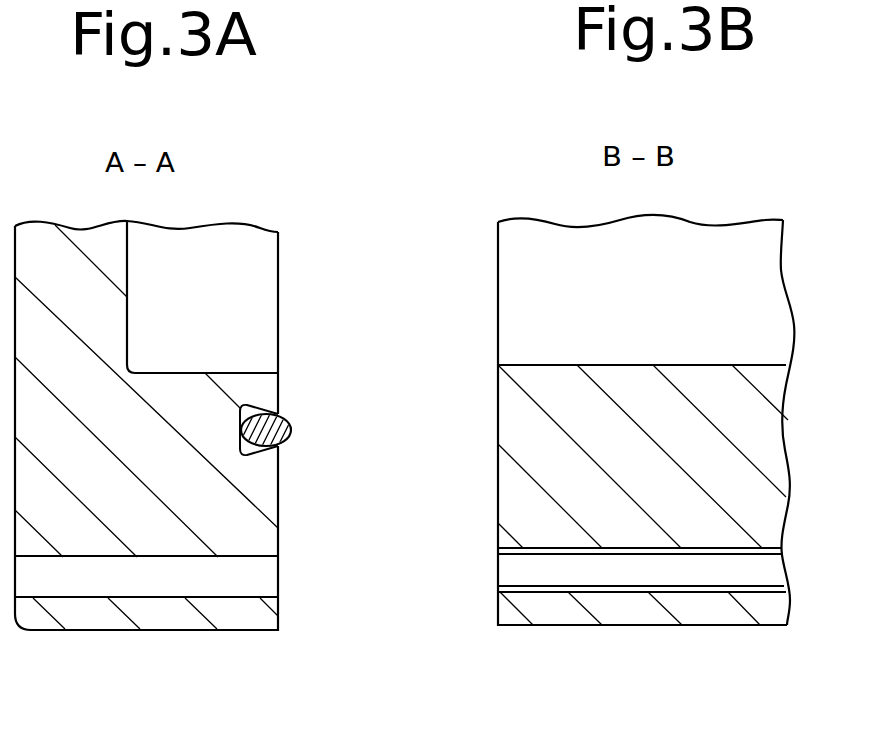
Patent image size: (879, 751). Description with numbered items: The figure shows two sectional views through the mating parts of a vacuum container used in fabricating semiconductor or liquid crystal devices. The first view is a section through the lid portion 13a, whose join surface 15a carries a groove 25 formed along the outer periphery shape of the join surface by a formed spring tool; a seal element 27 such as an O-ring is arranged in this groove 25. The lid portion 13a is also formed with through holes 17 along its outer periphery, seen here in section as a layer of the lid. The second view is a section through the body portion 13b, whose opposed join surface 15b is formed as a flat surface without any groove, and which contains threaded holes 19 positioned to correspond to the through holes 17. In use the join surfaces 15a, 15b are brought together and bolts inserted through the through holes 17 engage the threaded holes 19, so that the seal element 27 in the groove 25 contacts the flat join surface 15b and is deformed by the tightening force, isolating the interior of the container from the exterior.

In FIG. 3A, the lid portion 13a is at (180, 612).
In FIG. 3B, the body portion 13b is at (615, 607).
In FIG. 3A, the join surface 15a is at (278, 505).
In FIG. 3B, the join surface 15b is at (498, 485).
In FIG. 3A, the through holes 17 is at (235, 593).
In FIG. 3B, the threaded holes 19 is at (535, 587).
In FIG. 3A, the groove 25 is at (283, 444).
In FIG. 3A, the seal element 27 is at (280, 414).